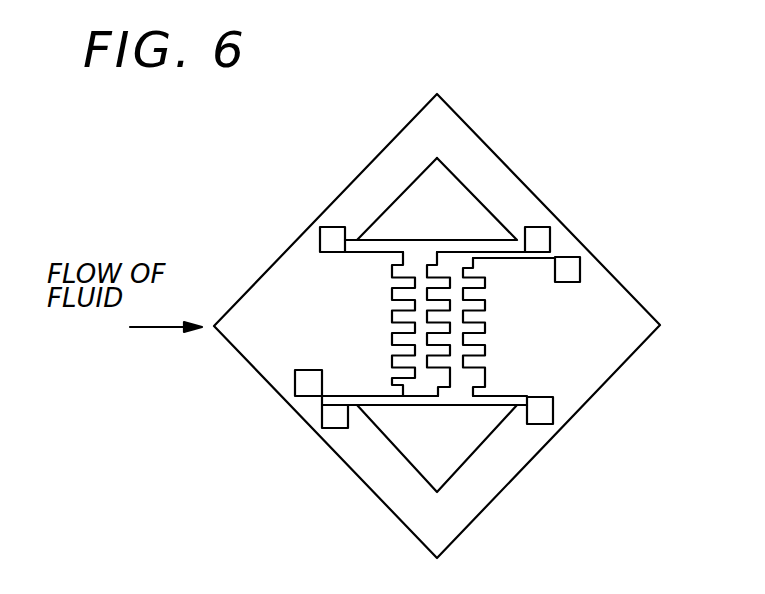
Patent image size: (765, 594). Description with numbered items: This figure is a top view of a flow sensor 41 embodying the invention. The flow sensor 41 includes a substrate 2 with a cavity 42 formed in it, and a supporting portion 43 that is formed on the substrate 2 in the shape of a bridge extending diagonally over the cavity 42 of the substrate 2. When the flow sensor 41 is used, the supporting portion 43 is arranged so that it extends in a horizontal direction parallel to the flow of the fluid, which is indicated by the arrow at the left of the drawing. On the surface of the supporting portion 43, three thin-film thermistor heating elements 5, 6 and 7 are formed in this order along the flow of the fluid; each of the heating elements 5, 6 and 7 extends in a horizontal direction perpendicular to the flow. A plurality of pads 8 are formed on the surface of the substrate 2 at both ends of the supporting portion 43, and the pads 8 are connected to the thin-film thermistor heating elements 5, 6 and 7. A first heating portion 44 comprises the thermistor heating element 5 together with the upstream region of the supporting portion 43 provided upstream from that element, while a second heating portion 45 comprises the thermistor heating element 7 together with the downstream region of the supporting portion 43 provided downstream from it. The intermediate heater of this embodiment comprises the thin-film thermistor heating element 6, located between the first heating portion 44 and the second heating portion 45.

The substrate 2 is at (610, 321).
The thin-film thermistor heating element 5 is at (390, 292).
The thin-film thermistor heating element 6 is at (450, 305).
The thin-film thermistor heating element 7 is at (487, 335).
The pads 8 is at (323, 418).
The flow sensor 41 is at (556, 172).
The cavity 42 is at (443, 190).
The supporting portion 43 is at (420, 240).
The first heating portion 44 is at (384, 216).
The second heating portion 45 is at (466, 220).